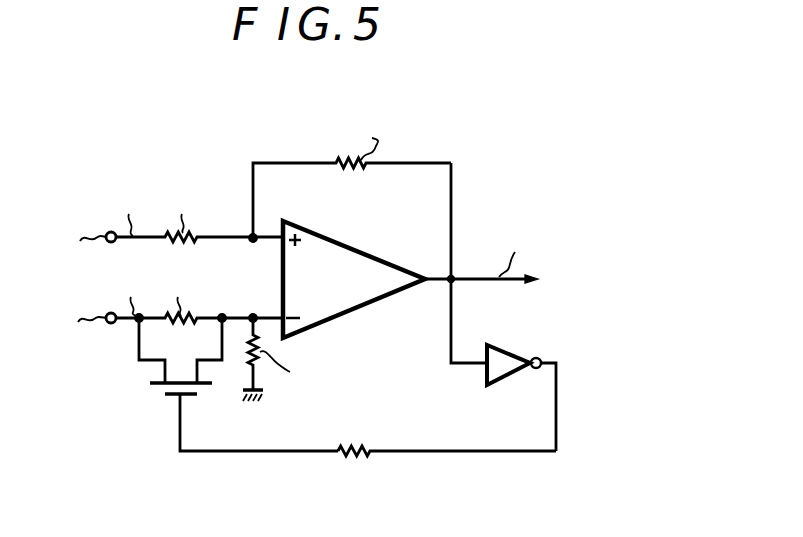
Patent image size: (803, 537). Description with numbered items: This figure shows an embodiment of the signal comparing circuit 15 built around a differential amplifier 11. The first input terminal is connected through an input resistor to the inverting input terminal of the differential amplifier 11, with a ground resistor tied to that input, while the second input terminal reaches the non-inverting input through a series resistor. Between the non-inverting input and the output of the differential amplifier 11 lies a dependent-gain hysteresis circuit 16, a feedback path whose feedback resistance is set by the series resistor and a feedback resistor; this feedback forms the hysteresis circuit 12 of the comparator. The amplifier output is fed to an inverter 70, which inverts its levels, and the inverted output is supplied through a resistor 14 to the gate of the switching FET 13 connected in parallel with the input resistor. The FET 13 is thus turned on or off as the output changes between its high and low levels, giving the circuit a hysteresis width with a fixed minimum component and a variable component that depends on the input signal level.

The differential amplifier 11 is at (362, 240).
The hysteresis circuit 12 is at (453, 311).
The FET 13 is at (170, 397).
The resistor 14 is at (349, 455).
The signal comparing circuit 15 is at (254, 142).
The dependent-gain hysteresis circuit 16 is at (453, 201).
The inverter 70 is at (514, 382).